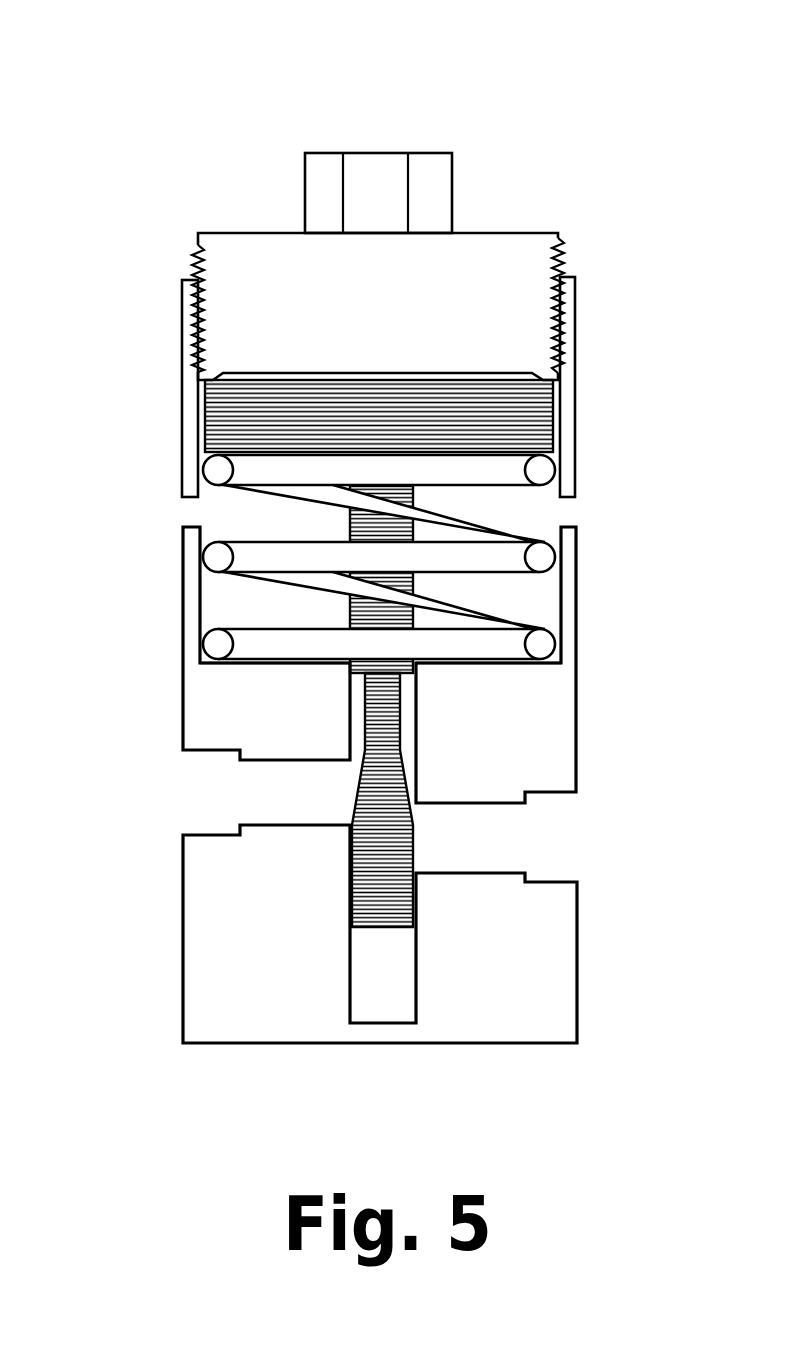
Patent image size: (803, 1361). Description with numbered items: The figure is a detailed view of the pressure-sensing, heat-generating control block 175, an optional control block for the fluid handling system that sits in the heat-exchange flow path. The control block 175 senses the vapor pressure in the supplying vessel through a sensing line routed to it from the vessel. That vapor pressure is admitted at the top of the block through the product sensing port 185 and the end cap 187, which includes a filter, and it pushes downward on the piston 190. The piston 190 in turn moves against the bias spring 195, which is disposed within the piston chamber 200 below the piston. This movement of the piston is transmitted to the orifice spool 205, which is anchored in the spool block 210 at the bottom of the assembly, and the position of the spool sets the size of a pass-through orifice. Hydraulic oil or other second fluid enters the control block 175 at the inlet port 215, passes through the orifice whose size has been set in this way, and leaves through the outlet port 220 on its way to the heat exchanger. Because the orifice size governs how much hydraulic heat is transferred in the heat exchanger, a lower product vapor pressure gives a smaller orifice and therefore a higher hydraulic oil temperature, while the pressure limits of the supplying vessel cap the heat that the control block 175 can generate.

The pressure-sensing, heat-generating control block 175 is at (195, 104).
The product sensing port 185 is at (367, 168).
The end cap 187 is at (488, 265).
The piston 190 is at (517, 408).
The bias spring 195 is at (512, 548).
The piston chamber 200 is at (217, 518).
The orifice spool 205 is at (382, 878).
The spool block 210 is at (228, 1000).
The inlet port 215 is at (547, 837).
The outlet port 220 is at (238, 797).